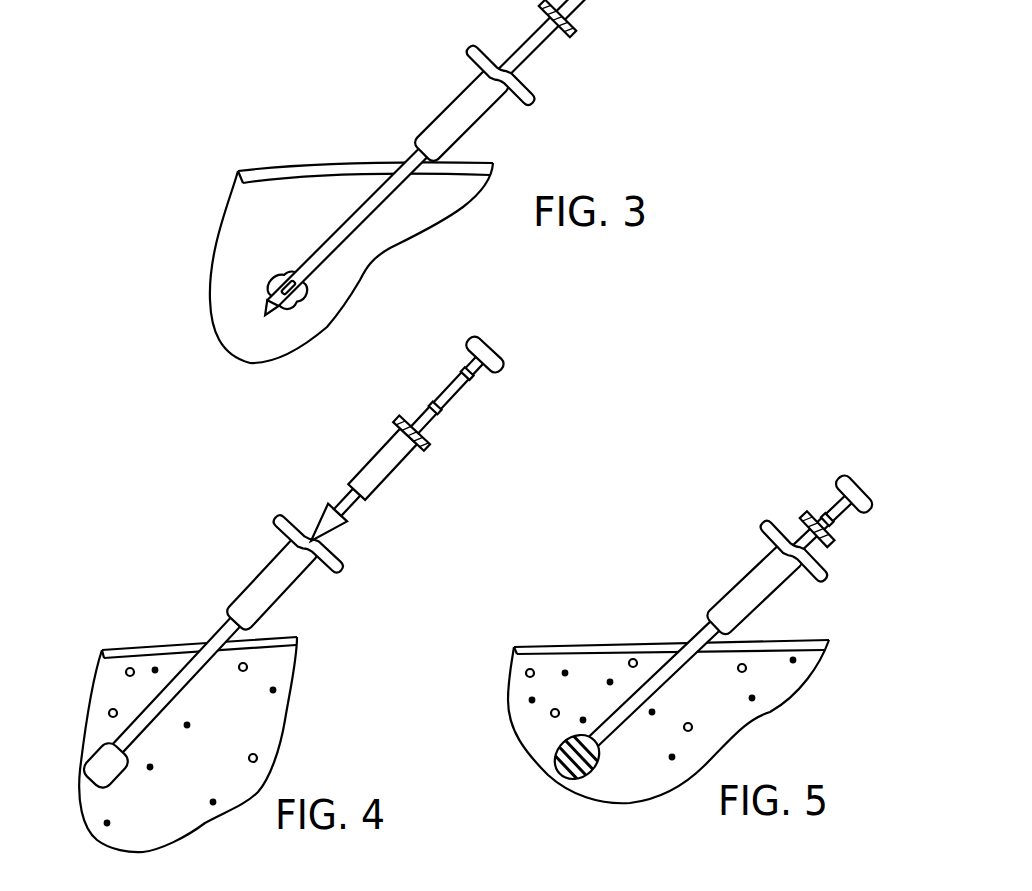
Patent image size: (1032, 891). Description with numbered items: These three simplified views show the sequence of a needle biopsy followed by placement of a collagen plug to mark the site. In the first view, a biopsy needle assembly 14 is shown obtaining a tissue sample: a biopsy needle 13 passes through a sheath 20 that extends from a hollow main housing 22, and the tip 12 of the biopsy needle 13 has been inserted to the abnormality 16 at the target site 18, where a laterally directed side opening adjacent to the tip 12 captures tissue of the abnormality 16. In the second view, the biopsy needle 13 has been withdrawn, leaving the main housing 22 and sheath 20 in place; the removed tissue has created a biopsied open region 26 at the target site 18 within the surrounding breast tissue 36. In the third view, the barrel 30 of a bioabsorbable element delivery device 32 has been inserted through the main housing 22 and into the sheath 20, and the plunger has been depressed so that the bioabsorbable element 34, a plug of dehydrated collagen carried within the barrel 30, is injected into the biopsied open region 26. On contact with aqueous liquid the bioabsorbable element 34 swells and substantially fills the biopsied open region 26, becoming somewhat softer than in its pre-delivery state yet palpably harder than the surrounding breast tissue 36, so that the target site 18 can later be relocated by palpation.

In FIG. 3, the tip 12 is at (267, 318).
In FIG. 3, the biopsy needle 13 is at (533, 43).
In FIG. 3, the biopsy needle assembly 14 is at (610, 118).
In FIG. 3, the abnormality 16 is at (297, 303).
In FIG. 3, the target site 18 is at (245, 297).
In FIG. 4, the target site 18 is at (66, 795).
In FIG. 5, the target site 18 is at (536, 782).
In FIG. 3, the sheath 20 is at (363, 212).
In FIG. 4, the sheath 20 is at (185, 687).
In FIG. 5, the sheath 20 is at (642, 687).
In FIG. 3, the main housing 22 is at (460, 125).
In FIG. 4, the main housing 22 is at (267, 598).
In FIG. 5, the main housing 22 is at (732, 593).
In FIG. 4, the biopsied open region 26 is at (107, 778).
In FIG. 4, the barrel 30 is at (373, 480).
In FIG. 4, the bioabsorbable element delivery device 32 is at (416, 445).
In FIG. 5, the bioabsorbable element 34 is at (583, 773).
In FIG. 4, the breast tissue 36 is at (212, 768).